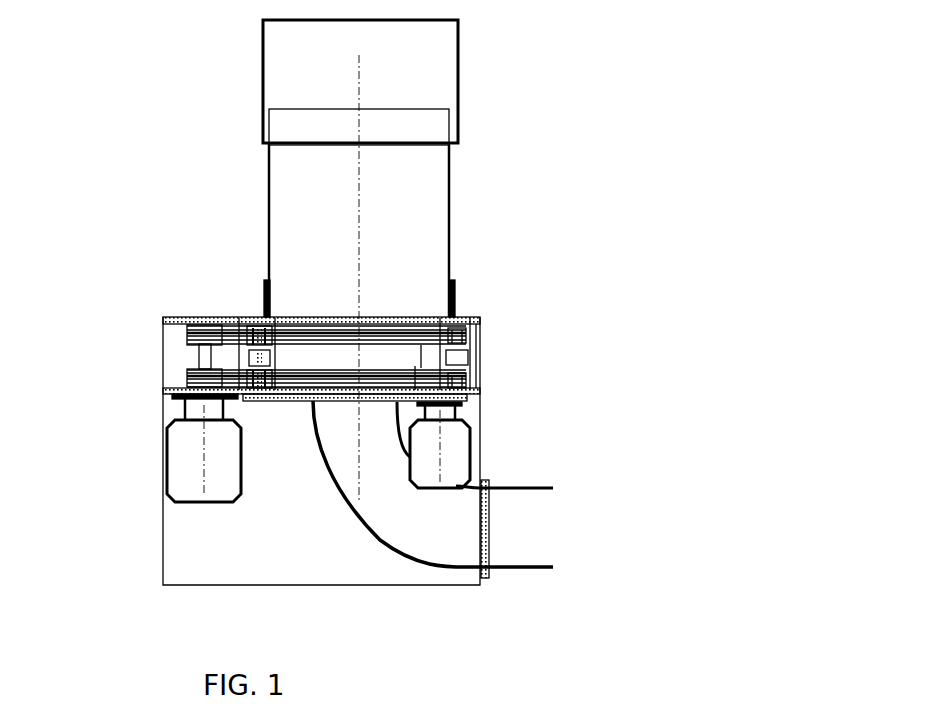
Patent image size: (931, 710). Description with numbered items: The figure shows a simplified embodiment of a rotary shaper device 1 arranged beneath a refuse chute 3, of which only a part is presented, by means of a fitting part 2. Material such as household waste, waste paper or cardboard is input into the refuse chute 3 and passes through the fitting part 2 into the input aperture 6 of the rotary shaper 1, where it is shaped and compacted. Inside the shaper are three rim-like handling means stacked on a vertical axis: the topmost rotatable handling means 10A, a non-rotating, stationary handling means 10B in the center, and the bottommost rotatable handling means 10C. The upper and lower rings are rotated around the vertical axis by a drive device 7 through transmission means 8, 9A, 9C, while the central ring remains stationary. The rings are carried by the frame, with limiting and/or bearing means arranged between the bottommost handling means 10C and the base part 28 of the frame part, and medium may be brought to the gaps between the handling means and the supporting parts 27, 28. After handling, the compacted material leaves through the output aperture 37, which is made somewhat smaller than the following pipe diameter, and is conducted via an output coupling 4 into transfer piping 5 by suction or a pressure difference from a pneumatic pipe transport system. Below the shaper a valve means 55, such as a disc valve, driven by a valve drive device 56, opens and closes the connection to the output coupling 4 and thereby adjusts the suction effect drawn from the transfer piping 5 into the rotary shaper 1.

The rotary shaper device 1 is at (199, 305).
The fitting part 2 is at (280, 235).
The refuse chute 3 is at (290, 95).
The output coupling 4 is at (363, 488).
The transfer piping 5 is at (533, 532).
The input aperture 6 is at (368, 302).
The drive device 7 is at (178, 478).
The transmission means 8 is at (202, 358).
The transmission means 9A is at (236, 330).
The transmission means 9C is at (237, 376).
The topmost rotatable handling means 10A is at (447, 326).
The non-rotating stationary handling means 10B is at (442, 354).
The bottommost rotatable handling means 10C is at (432, 378).
The supporting part 27 is at (165, 317).
The base part of the frame part 28 is at (253, 398).
The output aperture 37 is at (323, 393).
The valve means 55 is at (467, 398).
The drive device of the valve 56 is at (458, 467).